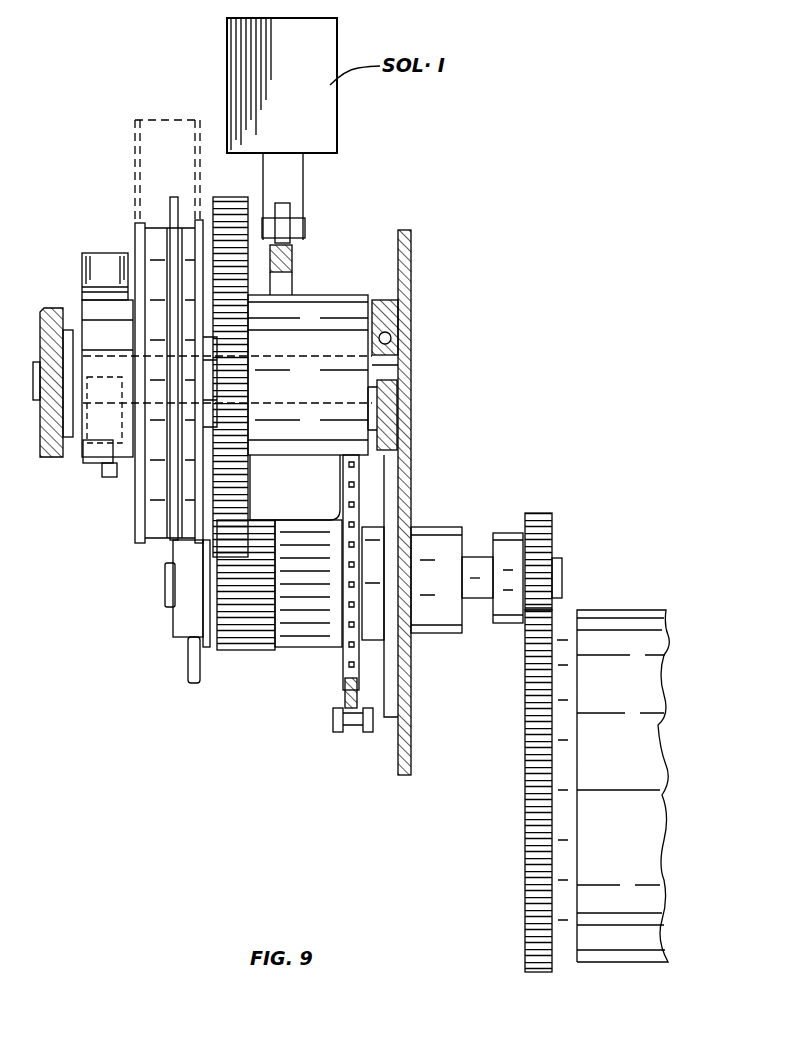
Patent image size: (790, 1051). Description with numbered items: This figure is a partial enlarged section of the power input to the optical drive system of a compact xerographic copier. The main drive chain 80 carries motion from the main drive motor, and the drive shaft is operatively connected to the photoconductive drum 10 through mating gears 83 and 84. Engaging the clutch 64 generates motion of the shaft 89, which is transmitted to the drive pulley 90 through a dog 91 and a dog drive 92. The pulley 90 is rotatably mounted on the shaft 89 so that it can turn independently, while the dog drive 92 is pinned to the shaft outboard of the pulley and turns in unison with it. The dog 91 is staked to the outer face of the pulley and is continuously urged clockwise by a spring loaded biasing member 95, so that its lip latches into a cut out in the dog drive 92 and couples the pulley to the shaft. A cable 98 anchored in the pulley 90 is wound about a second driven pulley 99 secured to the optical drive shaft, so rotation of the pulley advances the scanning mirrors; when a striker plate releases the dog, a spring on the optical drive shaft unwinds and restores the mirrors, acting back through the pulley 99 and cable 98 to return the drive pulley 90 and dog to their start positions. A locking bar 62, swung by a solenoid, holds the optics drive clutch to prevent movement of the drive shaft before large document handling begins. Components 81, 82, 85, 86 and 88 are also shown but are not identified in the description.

The photoconductive drum 10 is at (650, 688).
The locking bar 62 is at (285, 285).
The clutch 64 is at (350, 310).
The main drive chain 80 is at (335, 715).
The chain / perforated strip 81 is at (345, 668).
The shaft 82 is at (478, 560).
The gear 83 is at (540, 530).
The gear 84 is at (530, 685).
The spline gear 85 is at (245, 646).
The gear 86 is at (245, 168).
The bearing 88 is at (405, 330).
The shaft 89 is at (410, 365).
The drive pulley 90 is at (138, 237).
The dog 91 is at (85, 268).
The dog drive 92 is at (85, 460).
The spring loaded biasing member 95 is at (110, 476).
The cable 98 is at (172, 508).
The second driven pulley 99 is at (132, 163).